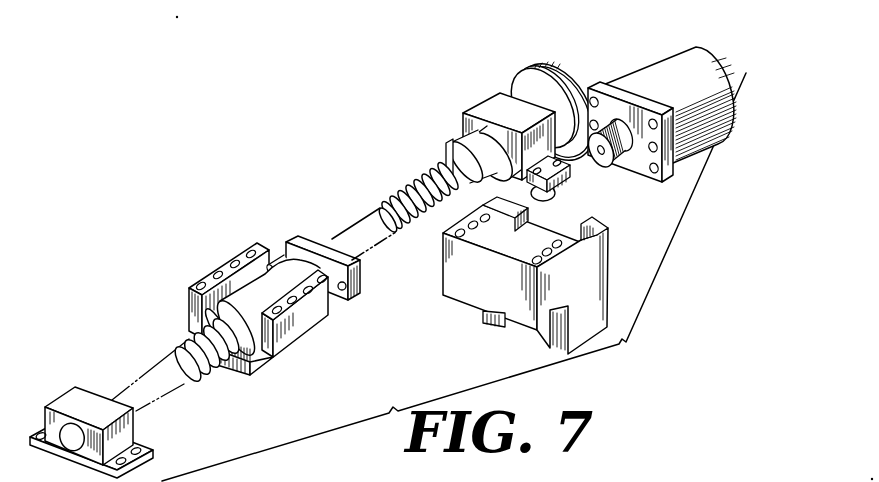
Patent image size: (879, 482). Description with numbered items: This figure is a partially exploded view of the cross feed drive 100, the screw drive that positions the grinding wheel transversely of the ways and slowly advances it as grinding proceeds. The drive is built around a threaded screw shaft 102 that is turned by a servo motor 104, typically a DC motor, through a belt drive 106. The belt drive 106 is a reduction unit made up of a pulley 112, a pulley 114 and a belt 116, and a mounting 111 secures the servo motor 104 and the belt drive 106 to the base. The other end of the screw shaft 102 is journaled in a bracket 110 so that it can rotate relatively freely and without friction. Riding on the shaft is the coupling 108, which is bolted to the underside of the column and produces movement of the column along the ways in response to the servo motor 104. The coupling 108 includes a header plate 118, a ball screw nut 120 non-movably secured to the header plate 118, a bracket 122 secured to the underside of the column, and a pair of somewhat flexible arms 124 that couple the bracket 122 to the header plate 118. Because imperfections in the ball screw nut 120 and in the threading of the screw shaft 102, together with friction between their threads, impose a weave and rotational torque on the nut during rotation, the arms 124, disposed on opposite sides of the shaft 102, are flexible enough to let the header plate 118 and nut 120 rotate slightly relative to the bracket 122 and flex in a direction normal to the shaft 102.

The cross feed drive 100 is at (226, 239).
The threaded screw shaft 102 is at (207, 369).
The servo motor 104 is at (655, 80).
The belt drive 106 is at (544, 87).
The coupling 108 is at (192, 279).
The bracket 110 is at (127, 433).
The mounting 111 is at (590, 278).
The pulley 112 is at (600, 157).
The pulley 114 is at (507, 93).
The belt 116 is at (567, 86).
The header plate 118 is at (362, 282).
The ball screw nut 120 is at (240, 249).
The bracket 122 is at (308, 328).
The flexible arms 124 is at (276, 265).